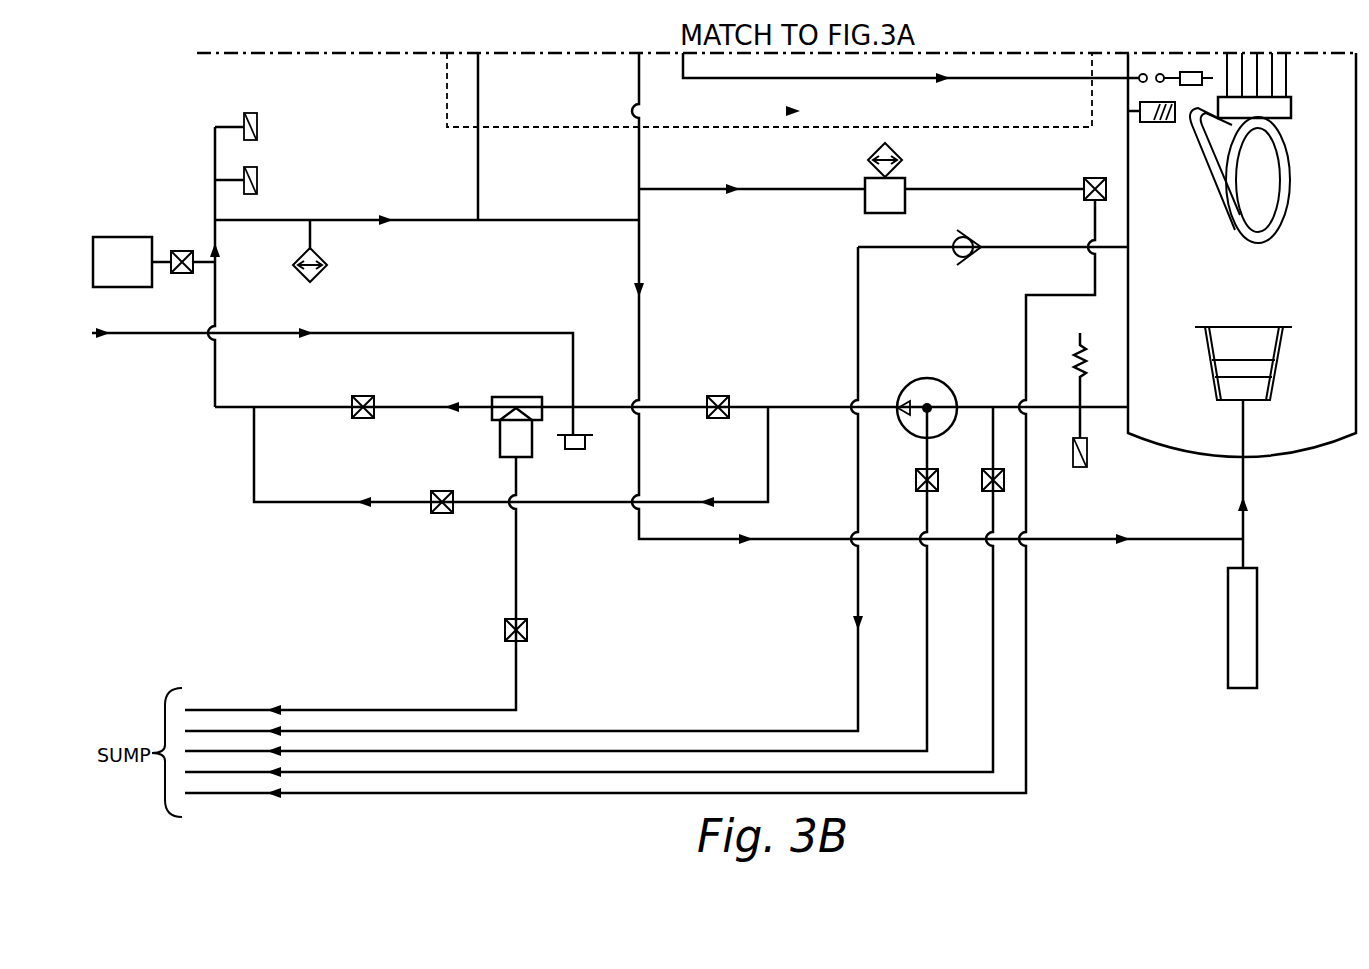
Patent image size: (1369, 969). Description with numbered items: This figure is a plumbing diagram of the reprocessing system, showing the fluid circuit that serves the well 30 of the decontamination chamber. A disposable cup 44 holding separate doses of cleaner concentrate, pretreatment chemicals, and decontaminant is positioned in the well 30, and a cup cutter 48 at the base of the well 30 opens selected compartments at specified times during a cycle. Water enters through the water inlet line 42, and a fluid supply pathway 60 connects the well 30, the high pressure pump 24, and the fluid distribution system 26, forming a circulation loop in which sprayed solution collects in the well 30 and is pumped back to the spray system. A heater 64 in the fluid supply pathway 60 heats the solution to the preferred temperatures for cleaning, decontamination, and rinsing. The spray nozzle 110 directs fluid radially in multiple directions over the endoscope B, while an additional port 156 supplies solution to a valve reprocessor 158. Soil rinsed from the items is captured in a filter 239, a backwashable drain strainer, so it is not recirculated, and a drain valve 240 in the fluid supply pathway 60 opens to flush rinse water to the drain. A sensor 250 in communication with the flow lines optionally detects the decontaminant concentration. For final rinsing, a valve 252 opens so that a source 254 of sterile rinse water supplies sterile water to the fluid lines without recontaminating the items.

The source of sterile rinse water 254 is at (128, 237).
The valve 252 is at (182, 274).
The heater 64 is at (328, 284).
The fluid distribution system 26 is at (565, 128).
The sensor 250 is at (865, 208).
The port 156 is at (1140, 80).
The spray nozzle 110 is at (1145, 145).
The valve reprocessor 158 is at (1192, 72).
The endoscope B is at (1290, 212).
The cup 44 is at (1280, 340).
The well 30 is at (1312, 433).
The cup cutter 48 is at (1257, 628).
The water inlet line 42 is at (140, 338).
The filter 239 is at (518, 397).
The fluid supply pathway 60 is at (803, 407).
The high pressure pump 24 is at (927, 378).
The drain valve 240 is at (1004, 480).